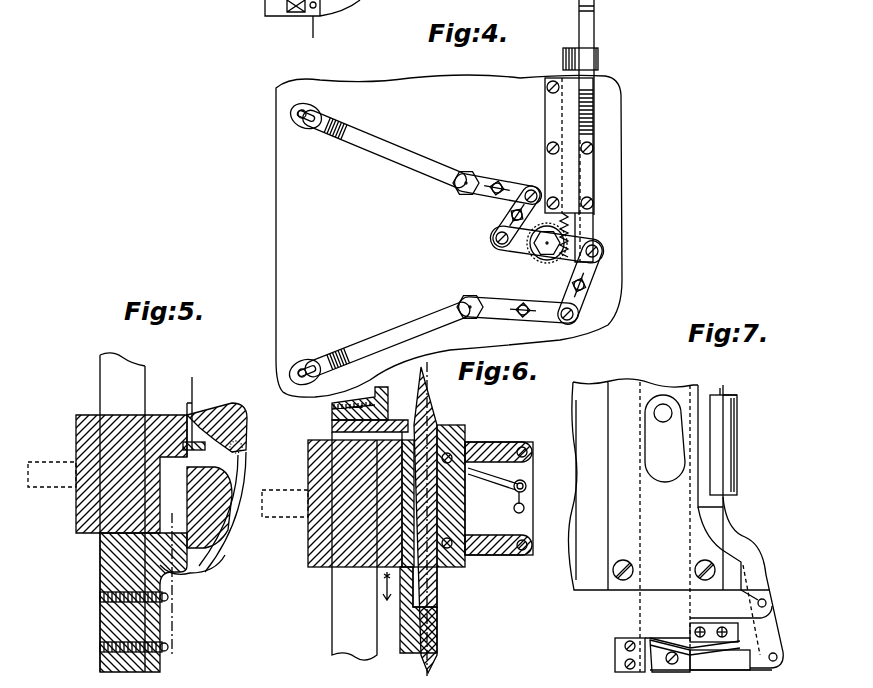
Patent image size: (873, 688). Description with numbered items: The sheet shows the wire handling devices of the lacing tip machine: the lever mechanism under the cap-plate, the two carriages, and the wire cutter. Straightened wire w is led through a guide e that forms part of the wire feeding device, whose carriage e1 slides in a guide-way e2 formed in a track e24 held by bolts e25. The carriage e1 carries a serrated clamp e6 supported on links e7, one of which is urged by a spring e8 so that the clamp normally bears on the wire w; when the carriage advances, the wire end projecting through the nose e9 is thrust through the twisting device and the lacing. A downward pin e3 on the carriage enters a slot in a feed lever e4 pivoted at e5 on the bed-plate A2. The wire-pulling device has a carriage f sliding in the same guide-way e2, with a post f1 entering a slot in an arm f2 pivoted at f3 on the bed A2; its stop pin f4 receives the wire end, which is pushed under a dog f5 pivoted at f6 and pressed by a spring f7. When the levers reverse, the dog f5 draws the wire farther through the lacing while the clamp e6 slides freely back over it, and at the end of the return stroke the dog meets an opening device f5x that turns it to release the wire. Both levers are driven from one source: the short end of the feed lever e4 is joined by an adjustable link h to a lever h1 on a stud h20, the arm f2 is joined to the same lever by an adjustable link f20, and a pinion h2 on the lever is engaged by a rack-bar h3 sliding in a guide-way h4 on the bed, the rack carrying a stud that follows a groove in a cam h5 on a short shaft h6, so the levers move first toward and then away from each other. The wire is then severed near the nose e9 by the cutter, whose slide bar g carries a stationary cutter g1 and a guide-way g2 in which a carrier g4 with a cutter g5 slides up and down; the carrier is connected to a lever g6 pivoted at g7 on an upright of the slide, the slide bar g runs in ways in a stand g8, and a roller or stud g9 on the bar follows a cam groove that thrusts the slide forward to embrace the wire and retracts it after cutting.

In FIG. 4, the bed-plate A2 is at (277, 283).
In FIG. 6, the guide e is at (437, 403).
In FIG. 6, the carriage e1 is at (330, 562).
In FIG. 5, the guide-way e2 is at (147, 412).
In FIG. 6, the guide-way e2 is at (332, 424).
In FIG. 4, the pin e3 is at (290, 116).
In FIG. 6, the pin e3 is at (272, 492).
In FIG. 4, the feed lever e4 is at (350, 134).
In FIG. 4, the pivot e5 is at (468, 174).
In FIG. 6, the clamp e6 is at (452, 524).
In FIG. 6, the links e7 is at (492, 445).
In FIG. 6, the spring e8 is at (513, 486).
In FIG. 6, the nose e9 is at (436, 641).
In FIG. 4, the track e24 is at (265, 4).
In FIG. 4, the bolts e25 is at (282, 17).
In FIG. 6, the wire w is at (428, 601).
In FIG. 5, the carriage f is at (106, 425).
In FIG. 4, the post or pin f1 is at (292, 372).
In FIG. 5, the post or pin f1 is at (51, 484).
In FIG. 4, the arm f2 is at (377, 330).
In FIG. 4, the pivot f3 is at (465, 300).
In FIG. 5, the stop pin f4 is at (192, 473).
In FIG. 5, the dog f5 is at (193, 412).
In FIG. 5, the opening device f5x is at (220, 560).
In FIG. 5, the pivot f6 is at (243, 408).
In FIG. 5, the spring f7 is at (229, 516).
In FIG. 4, the adjustable link f20 is at (585, 300).
In FIG. 4, the adjustable link h is at (506, 216).
In FIG. 4, the lever h1 is at (512, 250).
In FIG. 4, the pinion h2 is at (540, 233).
In FIG. 4, the rack-bar h3 is at (573, 224).
In FIG. 4, the guide-way h4 is at (597, 177).
In FIG. 4, the cam h5 is at (595, 12).
In FIG. 4, the short shaft h6 is at (599, 56).
In FIG. 4, the stud h20 is at (547, 250).
In FIG. 7, the slide bar g is at (672, 385).
In FIG. 7, the stationary cutter g1 is at (613, 639).
In FIG. 7, the guide-way g2 is at (742, 641).
In FIG. 7, the carrier g4 is at (780, 667).
In FIG. 7, the cutter g5 is at (657, 650).
In FIG. 7, the lever g6 is at (764, 585).
In FIG. 7, the pivot g7 is at (767, 603).
In FIG. 7, the stand g8 is at (581, 566).
In FIG. 7, the roller or stud g9 is at (660, 410).